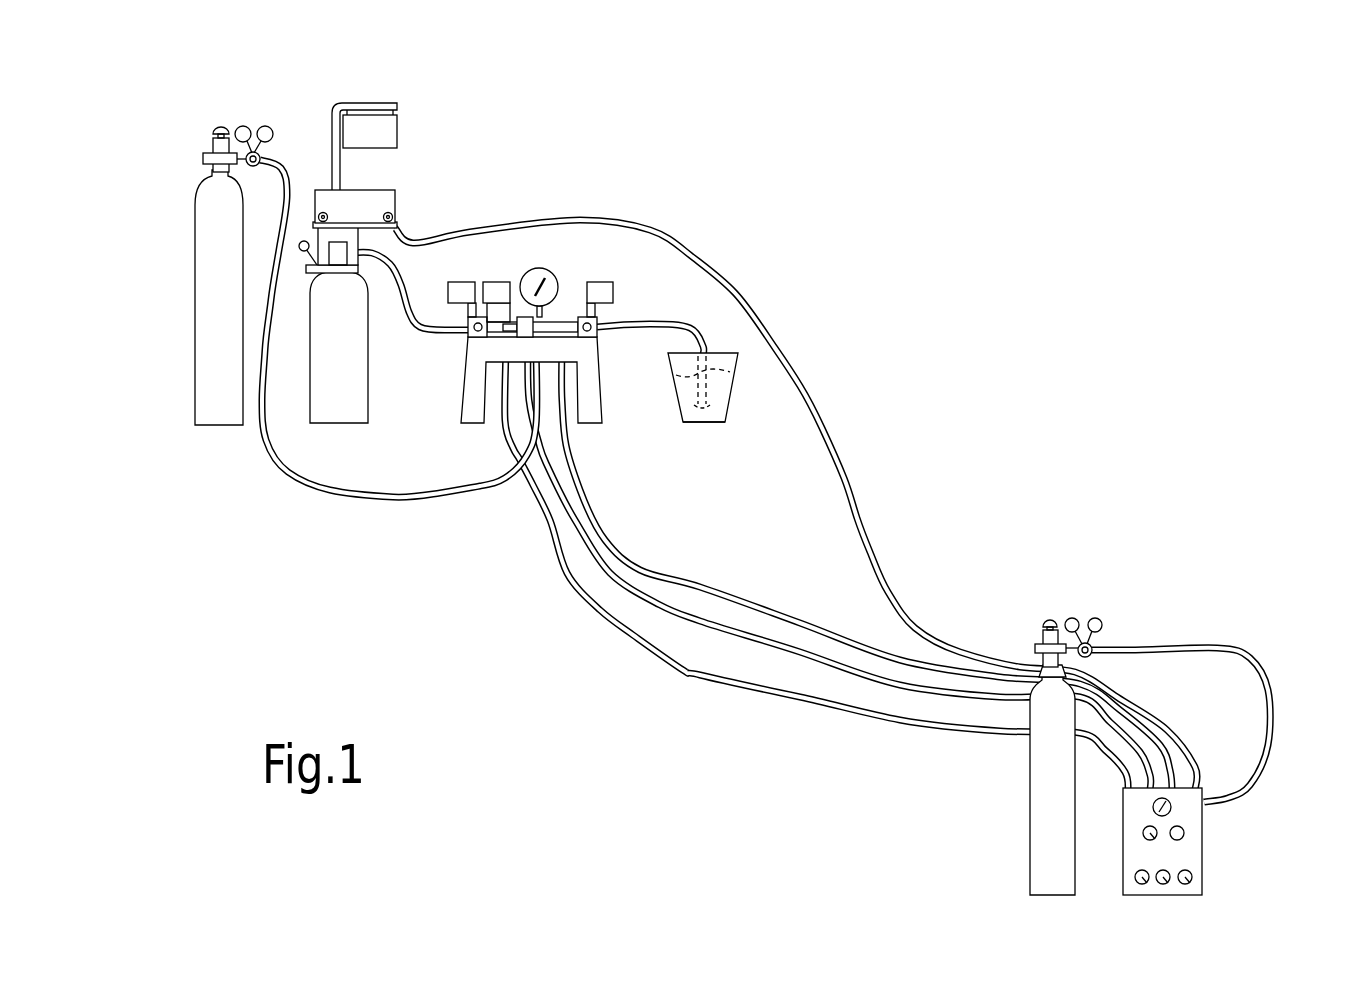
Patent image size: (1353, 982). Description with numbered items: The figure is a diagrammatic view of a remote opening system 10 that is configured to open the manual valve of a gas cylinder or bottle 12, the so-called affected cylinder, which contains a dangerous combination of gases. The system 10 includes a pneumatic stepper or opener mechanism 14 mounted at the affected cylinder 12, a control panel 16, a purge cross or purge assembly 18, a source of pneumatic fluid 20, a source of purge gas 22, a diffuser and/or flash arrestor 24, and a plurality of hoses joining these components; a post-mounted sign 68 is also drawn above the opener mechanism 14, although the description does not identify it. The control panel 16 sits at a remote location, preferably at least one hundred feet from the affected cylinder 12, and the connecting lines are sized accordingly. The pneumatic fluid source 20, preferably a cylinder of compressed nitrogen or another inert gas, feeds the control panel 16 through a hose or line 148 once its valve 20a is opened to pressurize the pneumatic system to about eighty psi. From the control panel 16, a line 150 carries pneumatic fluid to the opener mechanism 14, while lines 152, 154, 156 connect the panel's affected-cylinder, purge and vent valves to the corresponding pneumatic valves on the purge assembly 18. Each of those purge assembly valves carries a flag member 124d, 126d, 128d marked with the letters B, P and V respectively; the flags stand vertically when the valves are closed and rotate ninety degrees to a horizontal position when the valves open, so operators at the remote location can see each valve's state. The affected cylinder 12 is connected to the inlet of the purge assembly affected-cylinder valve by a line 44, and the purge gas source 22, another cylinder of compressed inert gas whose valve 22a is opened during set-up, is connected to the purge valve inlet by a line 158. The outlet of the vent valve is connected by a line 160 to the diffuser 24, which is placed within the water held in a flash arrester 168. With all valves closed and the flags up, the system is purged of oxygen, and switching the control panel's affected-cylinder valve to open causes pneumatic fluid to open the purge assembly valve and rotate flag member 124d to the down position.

The remote opening system 10 is at (946, 254).
The affected cylinder 12 is at (330, 426).
The opener mechanism 14 is at (398, 203).
The control panel 16 is at (1203, 833).
The purge assembly 18 is at (606, 398).
The source of pneumatic fluid 20 is at (1030, 832).
The valve of the pneumatic fluid cylinder 20a is at (1050, 618).
The source of purge gas 22 is at (221, 427).
The valve of the purge gas cylinder 22a is at (216, 126).
The diffuser 24 is at (740, 391).
The line 44 is at (408, 313).
The sign post 68 is at (368, 102).
The flag member 124d is at (462, 282).
The flag member 126d is at (498, 282).
The flag member 128d is at (603, 282).
The hose or line 148 is at (1238, 645).
The hose or line 150 is at (850, 495).
The hose or line 152 is at (719, 591).
The hose or line 154 is at (624, 568).
The hose or line 156 is at (816, 567).
The hose or line 158 is at (395, 500).
The hose or line 160 is at (630, 322).
The flash arrester 168 is at (708, 423).